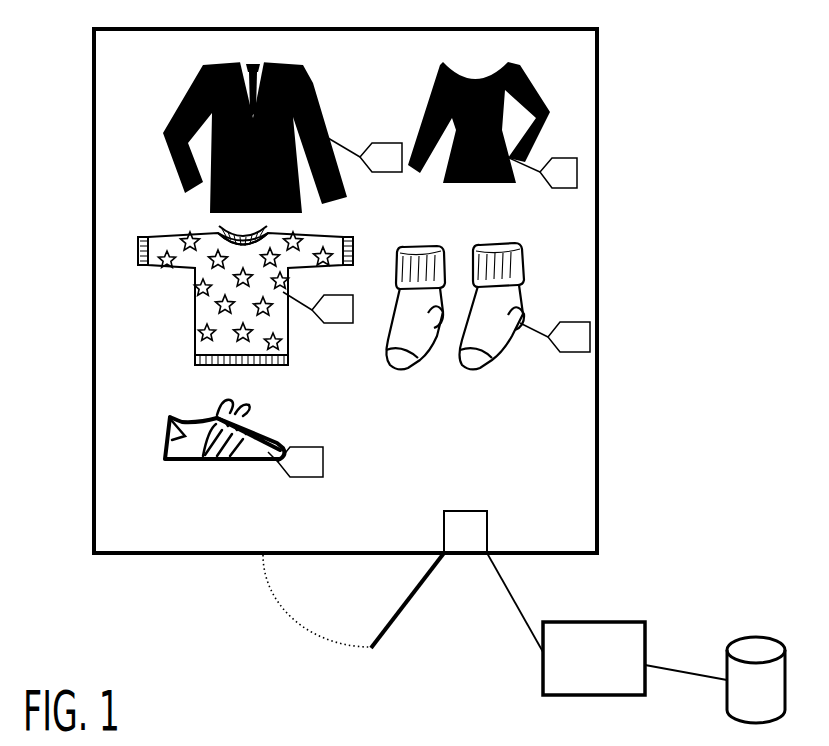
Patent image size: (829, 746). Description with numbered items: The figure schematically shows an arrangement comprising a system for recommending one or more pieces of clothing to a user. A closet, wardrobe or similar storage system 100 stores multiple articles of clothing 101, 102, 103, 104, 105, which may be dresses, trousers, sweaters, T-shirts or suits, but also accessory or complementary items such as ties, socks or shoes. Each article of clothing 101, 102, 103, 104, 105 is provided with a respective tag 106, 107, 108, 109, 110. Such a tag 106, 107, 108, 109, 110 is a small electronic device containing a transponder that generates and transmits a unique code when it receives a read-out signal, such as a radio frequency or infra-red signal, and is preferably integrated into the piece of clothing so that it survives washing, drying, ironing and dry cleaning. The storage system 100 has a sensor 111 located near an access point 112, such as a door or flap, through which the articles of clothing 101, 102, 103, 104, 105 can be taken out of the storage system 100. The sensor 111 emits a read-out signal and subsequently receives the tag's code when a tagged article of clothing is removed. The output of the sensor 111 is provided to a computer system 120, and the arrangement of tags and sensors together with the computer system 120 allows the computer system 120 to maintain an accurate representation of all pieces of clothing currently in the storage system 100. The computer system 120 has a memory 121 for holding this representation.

The storage system 100 is at (145, 553).
The article of clothing 101 is at (170, 152).
The article of clothing 102 is at (465, 182).
The article of clothing 103 is at (200, 311).
The article of clothing 104 is at (470, 360).
The article of clothing 105 is at (168, 432).
The tag 106 is at (382, 166).
The tag 107 is at (557, 182).
The tag 108 is at (333, 318).
The tag 109 is at (570, 346).
The tag 110 is at (303, 469).
The sensor 111 is at (470, 517).
The access point 112 is at (400, 612).
The computer system 120 is at (622, 633).
The memory 121 is at (765, 645).